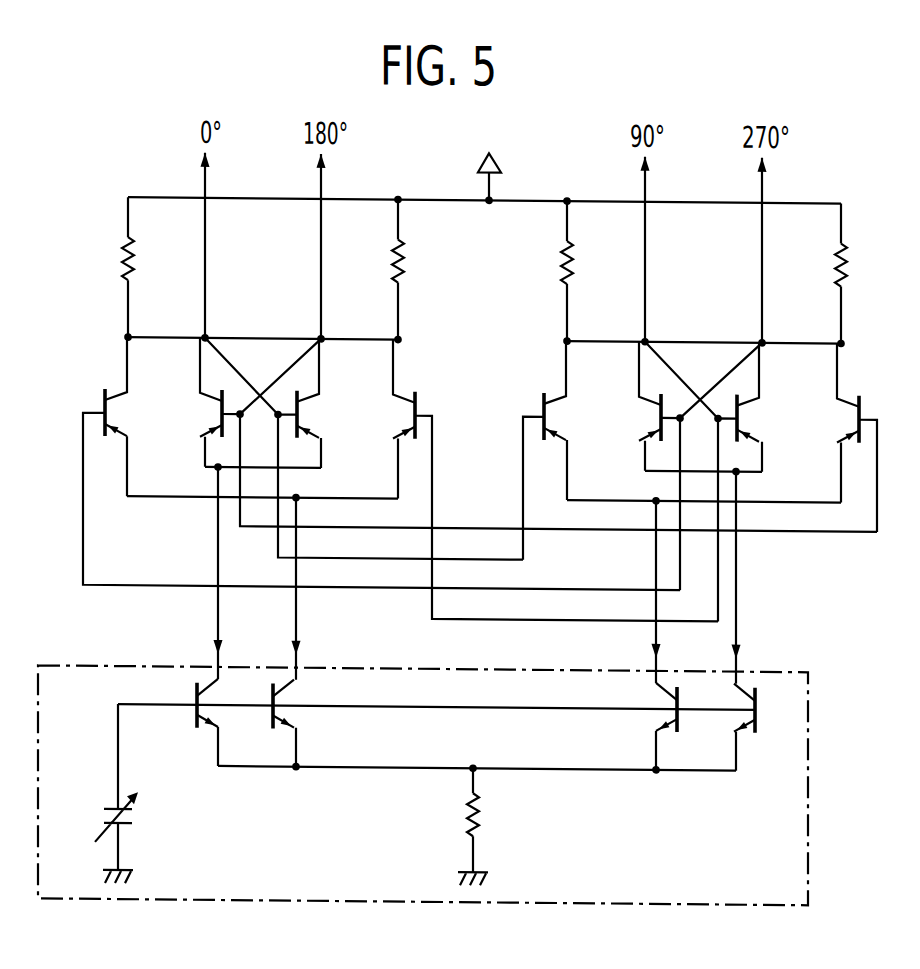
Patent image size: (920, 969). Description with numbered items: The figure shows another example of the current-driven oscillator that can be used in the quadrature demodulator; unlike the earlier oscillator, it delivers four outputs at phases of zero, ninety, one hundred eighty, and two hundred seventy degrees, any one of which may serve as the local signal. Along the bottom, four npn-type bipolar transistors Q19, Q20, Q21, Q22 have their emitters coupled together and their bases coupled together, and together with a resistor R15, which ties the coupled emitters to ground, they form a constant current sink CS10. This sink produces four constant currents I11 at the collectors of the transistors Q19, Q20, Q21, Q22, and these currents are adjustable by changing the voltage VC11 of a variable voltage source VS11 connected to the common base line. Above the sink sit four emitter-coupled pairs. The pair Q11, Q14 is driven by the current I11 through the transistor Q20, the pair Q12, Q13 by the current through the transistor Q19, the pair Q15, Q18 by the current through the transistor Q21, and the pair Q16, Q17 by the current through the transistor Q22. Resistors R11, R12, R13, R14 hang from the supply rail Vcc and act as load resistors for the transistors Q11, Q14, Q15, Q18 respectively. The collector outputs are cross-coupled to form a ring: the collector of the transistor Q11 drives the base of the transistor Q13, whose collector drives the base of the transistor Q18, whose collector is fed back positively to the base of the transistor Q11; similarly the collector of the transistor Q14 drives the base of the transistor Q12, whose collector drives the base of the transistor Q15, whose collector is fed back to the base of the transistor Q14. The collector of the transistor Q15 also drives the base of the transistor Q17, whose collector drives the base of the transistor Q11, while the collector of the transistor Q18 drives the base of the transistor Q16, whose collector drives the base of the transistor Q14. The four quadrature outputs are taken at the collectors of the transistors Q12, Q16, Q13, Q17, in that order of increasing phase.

The load resistor R11 is at (148, 267).
The load resistor R12 is at (420, 270).
The load resistor R13 is at (588, 271).
The load resistor R14 is at (863, 274).
The resistor R15 is at (489, 827).
The npn-type bipolar transistor Q11 is at (381, 463).
The npn-type bipolar transistor Q12 is at (523, 435).
The npn-type bipolar transistor Q13 is at (400, 449).
The npn-type bipolar transistor Q14 is at (542, 480).
The npn-type bipolar transistor Q15 is at (559, 451).
The npn-type bipolar transistor Q16 is at (646, 466).
The npn-type bipolar transistor Q17 is at (754, 482).
The npn-type bipolar transistor Q18 is at (842, 437).
The npn-type bipolar transistor Q19 is at (227, 723).
The npn-type bipolar transistor Q20 is at (305, 723).
The npn-type bipolar transistor Q21 is at (646, 727).
The npn-type bipolar transistor Q22 is at (723, 727).
The constant current I11 is at (496, 575).
The constant current sink CS10 is at (808, 751).
The variable voltage source VS11 is at (117, 794).
The voltage VC11 is at (83, 773).
The power supply Vcc is at (484, 161).